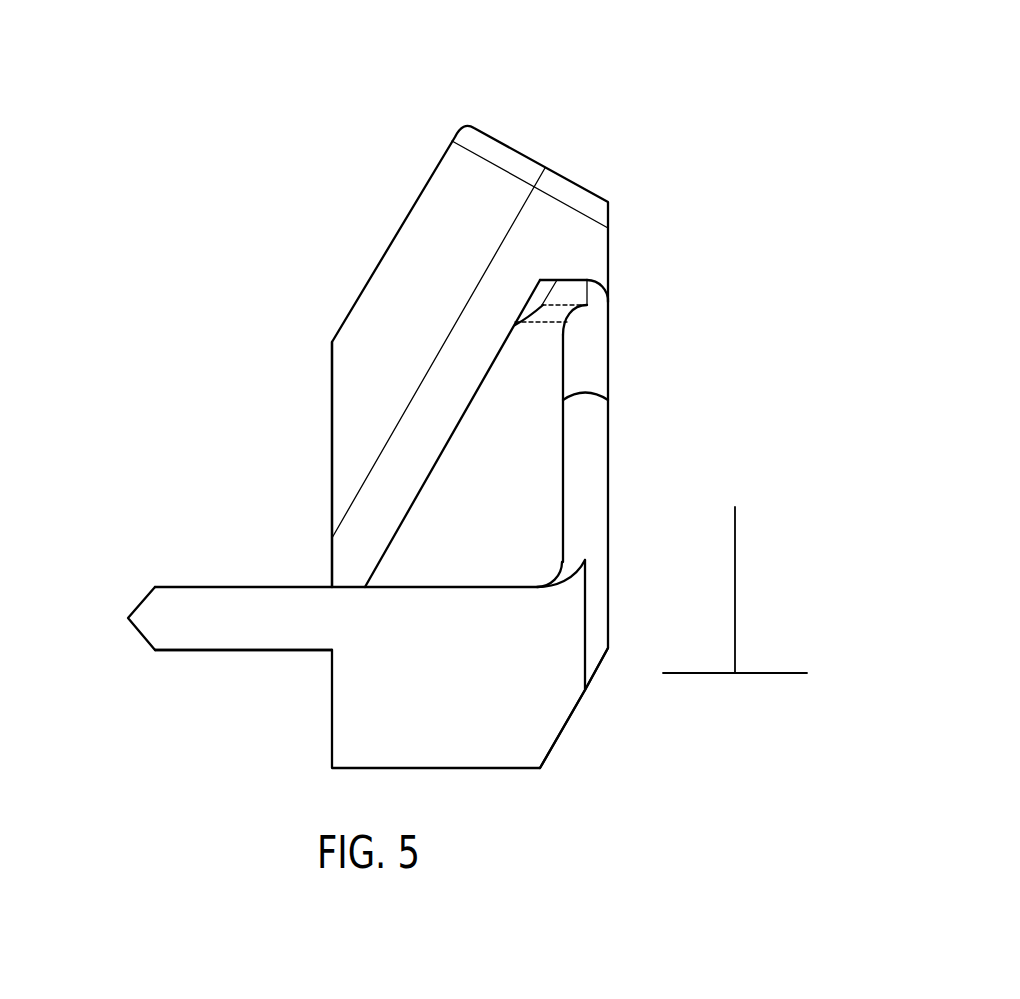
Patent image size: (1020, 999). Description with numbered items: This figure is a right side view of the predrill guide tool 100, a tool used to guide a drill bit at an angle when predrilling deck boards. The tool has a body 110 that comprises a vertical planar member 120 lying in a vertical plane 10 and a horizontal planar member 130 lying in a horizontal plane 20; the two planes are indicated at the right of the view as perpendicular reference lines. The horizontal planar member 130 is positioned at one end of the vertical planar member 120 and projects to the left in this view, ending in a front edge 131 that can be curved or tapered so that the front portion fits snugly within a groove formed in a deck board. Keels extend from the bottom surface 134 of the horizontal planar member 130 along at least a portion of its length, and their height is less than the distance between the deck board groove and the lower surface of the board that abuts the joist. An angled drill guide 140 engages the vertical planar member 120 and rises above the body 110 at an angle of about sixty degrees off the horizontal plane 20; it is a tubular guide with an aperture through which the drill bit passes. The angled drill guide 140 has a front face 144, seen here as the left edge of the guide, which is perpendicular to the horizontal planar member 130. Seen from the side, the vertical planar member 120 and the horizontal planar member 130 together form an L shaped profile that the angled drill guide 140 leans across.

The predrill guide tool 100 is at (630, 97).
The angled drill guide 140 is at (392, 275).
The front face 144 is at (332, 410).
The body 110 is at (595, 341).
The horizontal planar member 130 is at (230, 587).
The front edge 131 is at (128, 618).
The bottom surface 134 is at (243, 650).
The vertical planar member 120 is at (573, 610).
The vertical plane 10 is at (735, 558).
The horizontal plane 20 is at (705, 673).